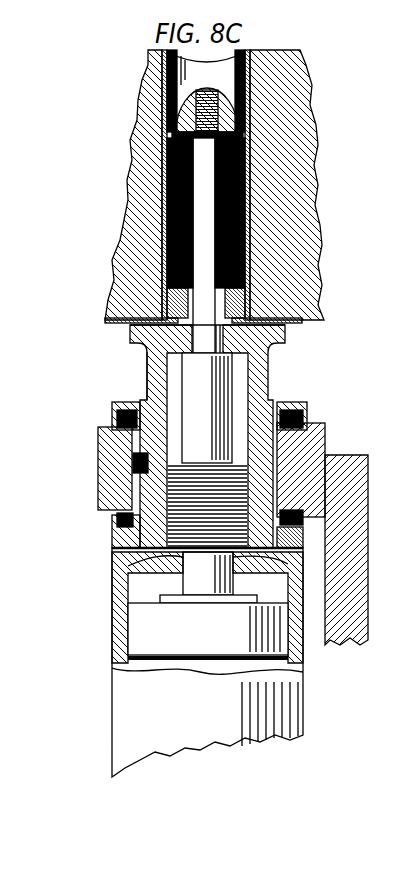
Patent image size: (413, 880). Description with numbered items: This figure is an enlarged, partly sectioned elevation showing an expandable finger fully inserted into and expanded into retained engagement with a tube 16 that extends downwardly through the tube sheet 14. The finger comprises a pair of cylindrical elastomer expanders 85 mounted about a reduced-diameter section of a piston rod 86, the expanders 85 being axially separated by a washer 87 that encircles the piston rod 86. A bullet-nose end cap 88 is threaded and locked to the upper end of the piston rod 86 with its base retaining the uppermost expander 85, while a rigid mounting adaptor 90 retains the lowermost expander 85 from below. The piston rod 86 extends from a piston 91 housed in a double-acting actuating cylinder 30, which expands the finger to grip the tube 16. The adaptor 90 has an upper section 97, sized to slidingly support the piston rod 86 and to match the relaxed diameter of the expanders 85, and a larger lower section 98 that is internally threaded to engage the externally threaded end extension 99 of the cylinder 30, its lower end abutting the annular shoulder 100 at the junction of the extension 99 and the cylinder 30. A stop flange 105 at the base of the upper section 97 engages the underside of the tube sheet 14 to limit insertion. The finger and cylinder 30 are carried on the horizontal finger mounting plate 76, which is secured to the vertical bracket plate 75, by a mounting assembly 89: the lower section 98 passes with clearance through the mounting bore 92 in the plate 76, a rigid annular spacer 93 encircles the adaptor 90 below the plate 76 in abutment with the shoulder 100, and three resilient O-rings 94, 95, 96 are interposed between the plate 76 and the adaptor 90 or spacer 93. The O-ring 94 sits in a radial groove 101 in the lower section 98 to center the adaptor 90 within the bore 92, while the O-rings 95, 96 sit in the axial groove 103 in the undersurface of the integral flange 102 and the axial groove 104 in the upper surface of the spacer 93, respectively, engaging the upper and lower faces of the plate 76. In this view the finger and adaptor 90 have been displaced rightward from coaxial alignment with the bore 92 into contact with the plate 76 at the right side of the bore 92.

The tube sheet 14 is at (308, 260).
The tube 16 is at (252, 71).
The actuating cylinder 30 is at (127, 710).
The bracket plate 75 is at (360, 567).
The finger mounting plate 76 is at (326, 424).
The elastomer expander 85 is at (167, 195).
The piston rod 86 is at (194, 360).
The washer 87 is at (246, 212).
The bullet-nose end cap 88 is at (180, 100).
The mounting assembly 89 is at (309, 401).
The mounting adaptor 90 is at (271, 358).
The piston 91 is at (215, 645).
The mounting bore 92 is at (138, 444).
The annular spacer 93 is at (115, 545).
The O-ring 94 is at (136, 463).
The O-ring 95 is at (306, 411).
The O-ring 96 is at (305, 518).
The adaptor upper section 97 is at (162, 307).
The adaptor lower section 98 is at (148, 388).
The threaded end extension 99 is at (200, 528).
The annular shoulder 100 is at (304, 528).
The annular radial groove 101 is at (170, 436).
The flange 102 is at (114, 403).
The annular axial groove 103 is at (118, 417).
The annular axial groove 104 is at (117, 521).
The stop flange 105 is at (286, 331).